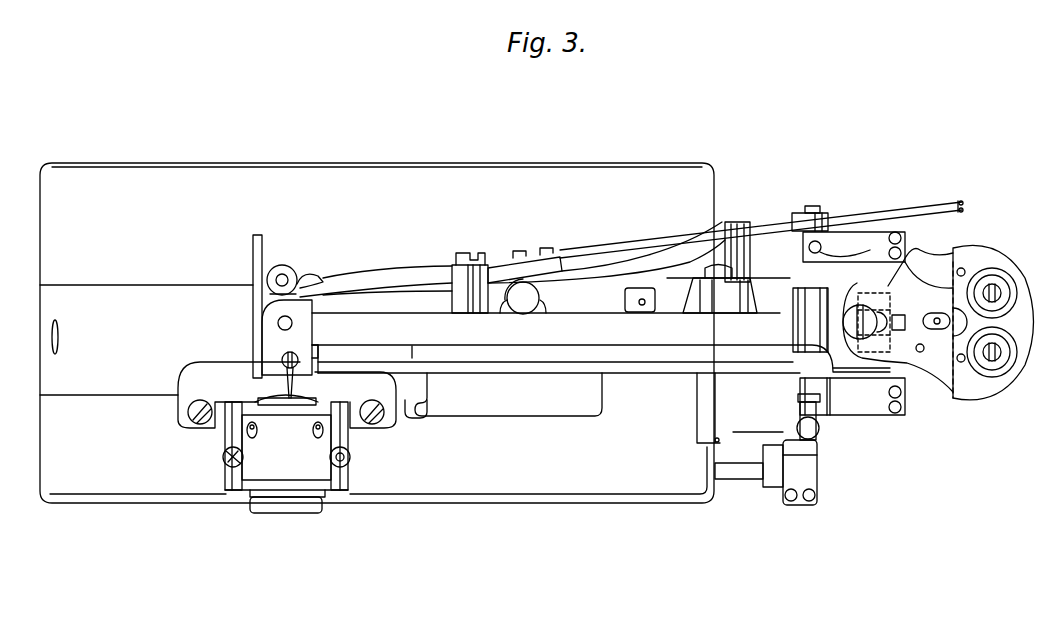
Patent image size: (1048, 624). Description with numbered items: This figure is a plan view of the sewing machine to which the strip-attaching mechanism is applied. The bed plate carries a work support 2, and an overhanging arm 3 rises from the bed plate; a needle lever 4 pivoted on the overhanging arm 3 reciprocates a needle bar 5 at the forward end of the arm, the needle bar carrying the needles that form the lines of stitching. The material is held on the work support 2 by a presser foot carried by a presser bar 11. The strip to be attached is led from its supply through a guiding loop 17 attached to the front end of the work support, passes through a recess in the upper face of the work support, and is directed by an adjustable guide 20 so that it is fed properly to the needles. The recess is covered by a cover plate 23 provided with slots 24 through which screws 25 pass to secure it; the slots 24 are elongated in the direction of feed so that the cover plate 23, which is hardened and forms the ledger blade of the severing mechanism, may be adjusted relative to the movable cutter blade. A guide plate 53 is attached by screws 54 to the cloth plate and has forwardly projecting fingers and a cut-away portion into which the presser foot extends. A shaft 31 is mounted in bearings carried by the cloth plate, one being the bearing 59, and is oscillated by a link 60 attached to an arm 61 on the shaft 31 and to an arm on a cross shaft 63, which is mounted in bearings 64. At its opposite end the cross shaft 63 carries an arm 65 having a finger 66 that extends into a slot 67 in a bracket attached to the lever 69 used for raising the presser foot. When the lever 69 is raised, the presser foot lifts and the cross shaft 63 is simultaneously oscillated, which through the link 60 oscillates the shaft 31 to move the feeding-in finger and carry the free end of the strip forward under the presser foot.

The work support 2 is at (603, 483).
The overhanging arm 3 is at (535, 333).
The needle lever 4 is at (651, 368).
The needle bar 5 is at (282, 362).
The presser bar 11 is at (278, 325).
The guiding loop 17 is at (292, 513).
The guide 20 is at (300, 398).
The cover plate 23 is at (286, 449).
The slots 24 is at (224, 455).
The screws 25 is at (246, 433).
The shaft 31 is at (747, 470).
The plate 53 is at (182, 378).
The screws 54 is at (188, 411).
The bearing 59 is at (768, 475).
The link 60 is at (800, 428).
The arm 61 is at (802, 470).
The cross shaft 63 is at (878, 262).
The bearings 64 is at (877, 378).
The arm 65 is at (835, 250).
The finger 66 is at (812, 208).
The slot 67 is at (930, 262).
The lever 69 is at (903, 212).